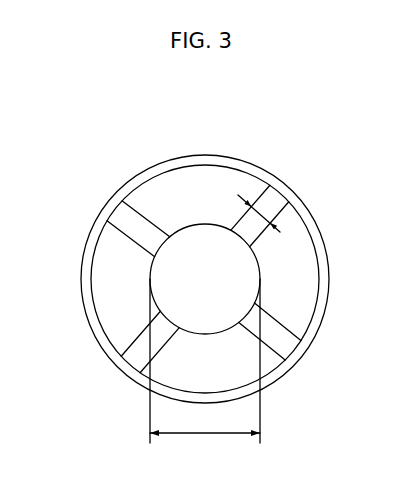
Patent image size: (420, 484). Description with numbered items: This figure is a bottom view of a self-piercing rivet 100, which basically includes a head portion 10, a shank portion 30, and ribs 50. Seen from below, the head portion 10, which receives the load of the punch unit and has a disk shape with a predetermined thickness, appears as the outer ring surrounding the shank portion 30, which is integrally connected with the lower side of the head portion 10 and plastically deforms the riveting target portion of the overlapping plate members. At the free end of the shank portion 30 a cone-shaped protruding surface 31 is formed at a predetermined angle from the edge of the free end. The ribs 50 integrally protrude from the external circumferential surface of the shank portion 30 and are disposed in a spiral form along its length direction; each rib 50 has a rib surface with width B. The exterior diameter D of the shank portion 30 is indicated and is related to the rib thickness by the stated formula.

The self-piercing rivet 100 is at (219, 114).
The head portion 10 is at (297, 293).
The shank portion 30 is at (185, 222).
The protruding surface 31 is at (237, 267).
The ribs 50 is at (142, 232).
The width B is at (258, 211).
The exterior diameter D is at (205, 371).